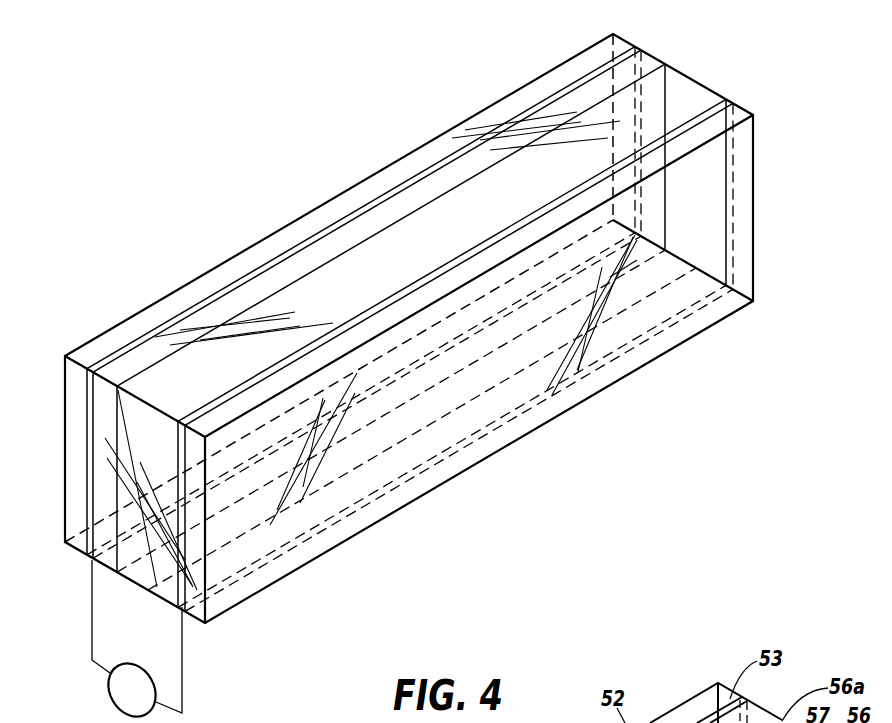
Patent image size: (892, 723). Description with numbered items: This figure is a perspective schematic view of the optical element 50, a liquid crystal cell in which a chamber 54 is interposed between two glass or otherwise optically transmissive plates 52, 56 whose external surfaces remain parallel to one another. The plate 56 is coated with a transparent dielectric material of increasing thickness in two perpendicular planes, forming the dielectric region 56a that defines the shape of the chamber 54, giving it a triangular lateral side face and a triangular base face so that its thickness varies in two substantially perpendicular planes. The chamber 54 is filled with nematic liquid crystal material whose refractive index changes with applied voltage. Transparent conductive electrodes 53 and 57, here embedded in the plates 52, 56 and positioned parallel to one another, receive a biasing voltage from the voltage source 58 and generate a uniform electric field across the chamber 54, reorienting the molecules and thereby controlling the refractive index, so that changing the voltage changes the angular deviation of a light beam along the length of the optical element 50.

The optical element 50 is at (268, 178).
The plate 52 is at (533, 96).
The conductive electrode 53 is at (630, 53).
The chamber 54 is at (80, 549).
The plate 56 is at (748, 107).
The dielectric region 56a is at (690, 97).
The conductive electrode 57 is at (713, 123).
The voltage source 58 is at (143, 665).